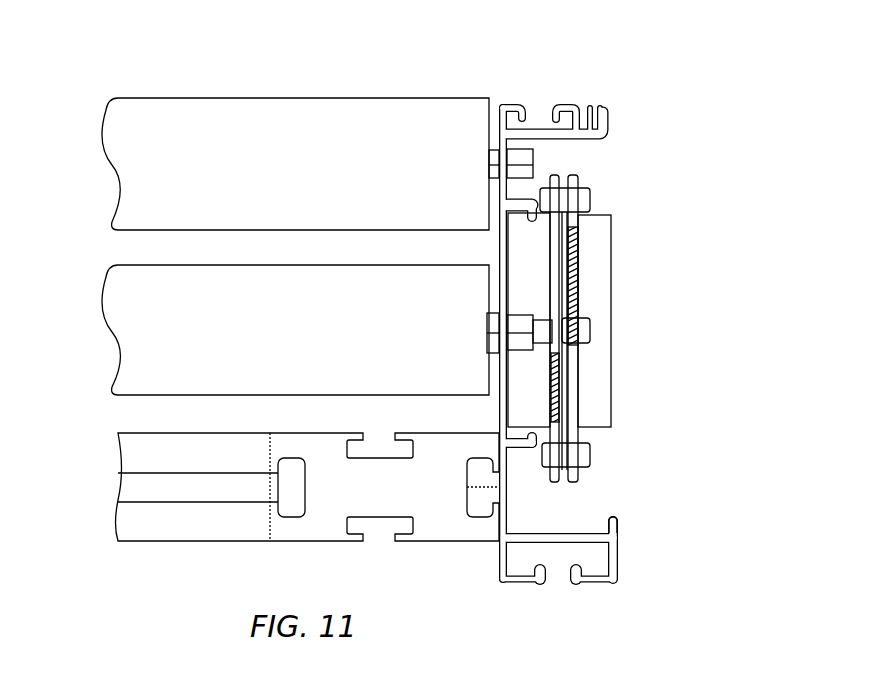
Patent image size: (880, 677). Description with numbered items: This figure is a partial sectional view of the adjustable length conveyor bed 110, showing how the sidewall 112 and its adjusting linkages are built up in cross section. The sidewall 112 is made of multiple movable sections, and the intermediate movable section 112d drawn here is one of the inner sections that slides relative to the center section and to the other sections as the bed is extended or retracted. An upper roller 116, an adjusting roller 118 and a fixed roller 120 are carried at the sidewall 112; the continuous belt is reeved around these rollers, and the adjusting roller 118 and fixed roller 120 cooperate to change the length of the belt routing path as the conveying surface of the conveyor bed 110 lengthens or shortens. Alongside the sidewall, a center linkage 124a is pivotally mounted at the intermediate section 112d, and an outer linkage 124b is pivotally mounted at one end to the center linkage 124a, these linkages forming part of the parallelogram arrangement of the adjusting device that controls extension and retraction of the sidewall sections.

The adjustable conveyor bed 110 is at (466, 80).
The sidewall 112 is at (592, 88).
The intermediate movable section 112d is at (620, 522).
The upper roller 116 is at (135, 144).
The adjusting roller 118 is at (135, 326).
The fixed roller 120 is at (150, 527).
The center linkage 124a is at (573, 232).
The outer linkage 124b is at (557, 177).